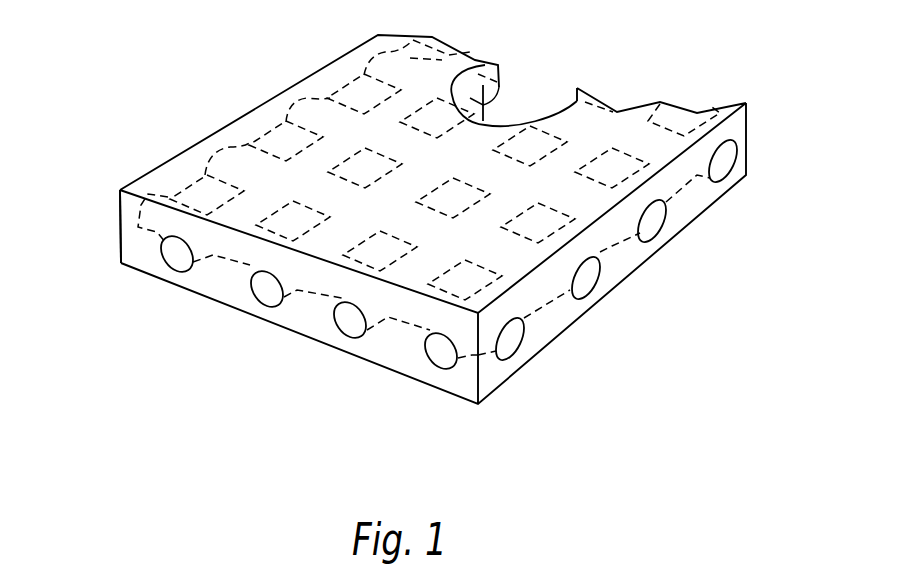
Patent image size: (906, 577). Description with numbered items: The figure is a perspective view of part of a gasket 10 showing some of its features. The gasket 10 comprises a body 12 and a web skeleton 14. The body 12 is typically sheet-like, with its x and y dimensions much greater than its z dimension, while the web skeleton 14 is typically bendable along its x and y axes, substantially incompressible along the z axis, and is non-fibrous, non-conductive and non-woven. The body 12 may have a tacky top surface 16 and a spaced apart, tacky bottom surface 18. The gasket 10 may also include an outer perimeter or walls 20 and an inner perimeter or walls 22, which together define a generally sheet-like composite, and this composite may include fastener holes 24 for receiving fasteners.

The gasket 10 is at (190, 117).
The body 12 is at (297, 318).
The web skeleton 14 is at (184, 272).
The tacky top surface 16 is at (457, 172).
The tacky bottom surface 18 is at (372, 363).
The outer perimeter or walls 20 is at (120, 233).
The inner perimeter or walls 22 is at (484, 105).
The fastener holes 24 is at (532, 100).